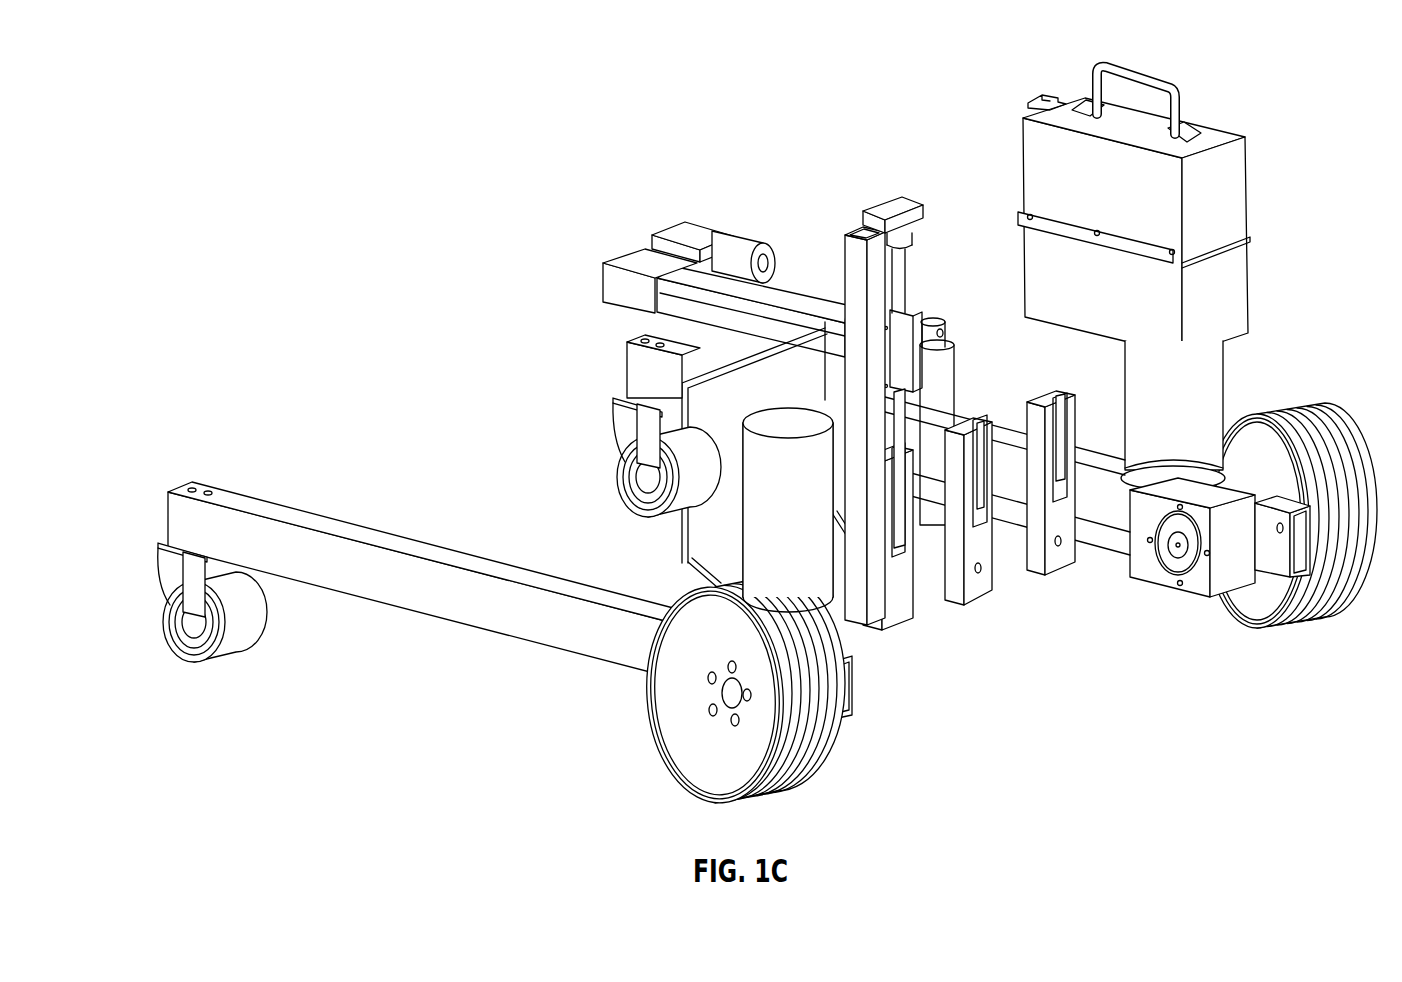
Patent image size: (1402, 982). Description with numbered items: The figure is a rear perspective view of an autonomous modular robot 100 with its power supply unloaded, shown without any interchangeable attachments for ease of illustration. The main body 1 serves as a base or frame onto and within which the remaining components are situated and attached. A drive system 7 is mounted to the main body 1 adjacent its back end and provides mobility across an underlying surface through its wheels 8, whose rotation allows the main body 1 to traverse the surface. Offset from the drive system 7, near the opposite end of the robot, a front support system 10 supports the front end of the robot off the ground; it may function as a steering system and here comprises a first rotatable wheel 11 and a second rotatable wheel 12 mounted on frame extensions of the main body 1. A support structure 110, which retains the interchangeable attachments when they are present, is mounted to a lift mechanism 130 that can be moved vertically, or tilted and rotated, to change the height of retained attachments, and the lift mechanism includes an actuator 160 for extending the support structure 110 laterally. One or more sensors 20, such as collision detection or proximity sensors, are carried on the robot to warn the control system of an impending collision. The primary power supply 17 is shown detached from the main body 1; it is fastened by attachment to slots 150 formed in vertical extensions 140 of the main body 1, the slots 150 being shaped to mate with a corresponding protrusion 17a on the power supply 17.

The autonomous modular robot 100 is at (198, 76).
The main body 1 is at (443, 620).
The drive system 7 is at (1223, 365).
The wheels 8 is at (1297, 620).
The front support system 10 is at (148, 521).
The first rotatable wheel 11 is at (253, 652).
The second rotatable wheel 12 is at (626, 478).
The primary power supply 17 is at (1248, 172).
The protrusion 17a is at (1038, 97).
The sensors 20 is at (915, 198).
The support structure 110 is at (797, 293).
The lift mechanism 130 is at (920, 314).
The vertical extensions 140 is at (898, 629).
The slots 150 is at (899, 454).
The actuator 160 is at (722, 229).